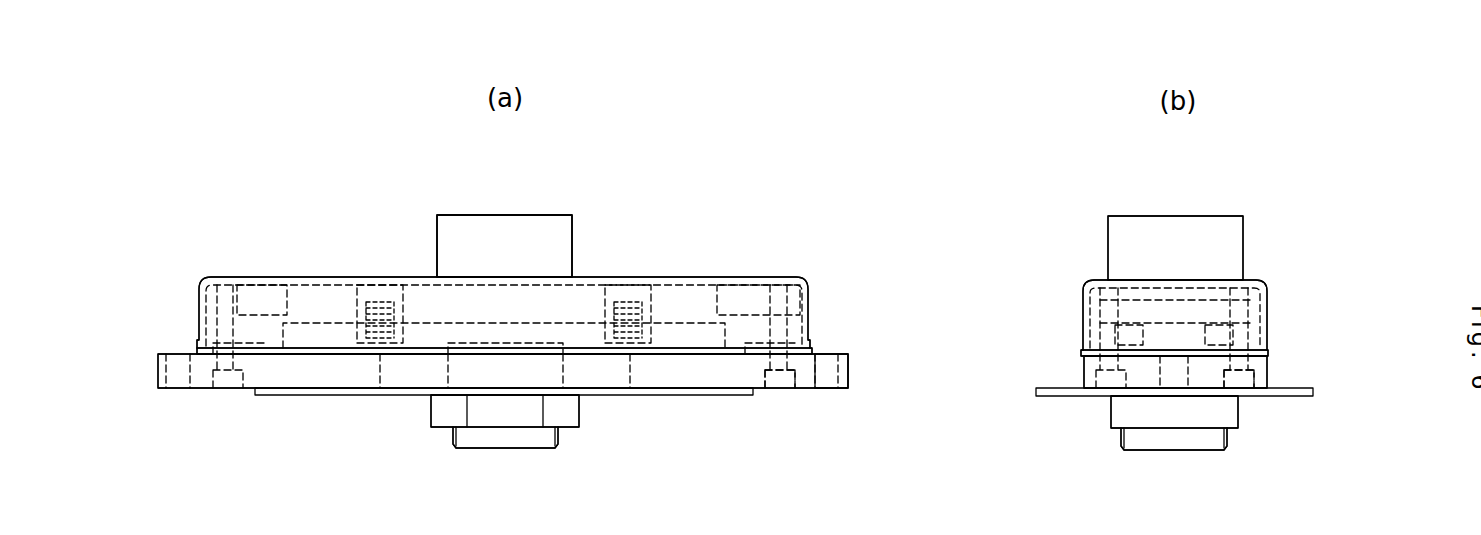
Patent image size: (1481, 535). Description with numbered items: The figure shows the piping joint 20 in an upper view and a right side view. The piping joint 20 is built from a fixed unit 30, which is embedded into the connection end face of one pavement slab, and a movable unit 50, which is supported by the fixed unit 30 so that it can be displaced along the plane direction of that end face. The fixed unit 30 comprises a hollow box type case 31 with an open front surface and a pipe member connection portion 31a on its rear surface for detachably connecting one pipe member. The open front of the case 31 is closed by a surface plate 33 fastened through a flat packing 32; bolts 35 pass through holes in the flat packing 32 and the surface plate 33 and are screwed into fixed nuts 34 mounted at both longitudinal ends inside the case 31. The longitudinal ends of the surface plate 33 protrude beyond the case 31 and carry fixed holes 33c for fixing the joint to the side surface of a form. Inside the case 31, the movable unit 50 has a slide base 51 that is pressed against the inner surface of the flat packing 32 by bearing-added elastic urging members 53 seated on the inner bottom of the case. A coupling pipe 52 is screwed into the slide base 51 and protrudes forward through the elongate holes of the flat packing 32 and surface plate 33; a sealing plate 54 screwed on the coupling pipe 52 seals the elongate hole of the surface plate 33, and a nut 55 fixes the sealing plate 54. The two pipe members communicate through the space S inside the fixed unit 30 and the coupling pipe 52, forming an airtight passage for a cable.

The piping joint 20 is at (706, 251).
The fixed unit 30 is at (775, 255).
The case 31 is at (362, 276).
The pipe member connection portion 31a is at (551, 221).
The flat packing 32 is at (813, 349).
The surface plate 33 is at (850, 380).
The fixed hole 33c is at (824, 392).
The fixed nut 34 is at (272, 300).
The bolt 35 is at (780, 392).
The movable unit 50 is at (594, 464).
The slide base 51 is at (733, 362).
The coupling pipe 52 is at (520, 450).
The bearing-added elastic urging member 53 is at (633, 280).
The sealing plate 54 is at (345, 396).
The nut 55 is at (580, 412).
The space S is at (468, 307).